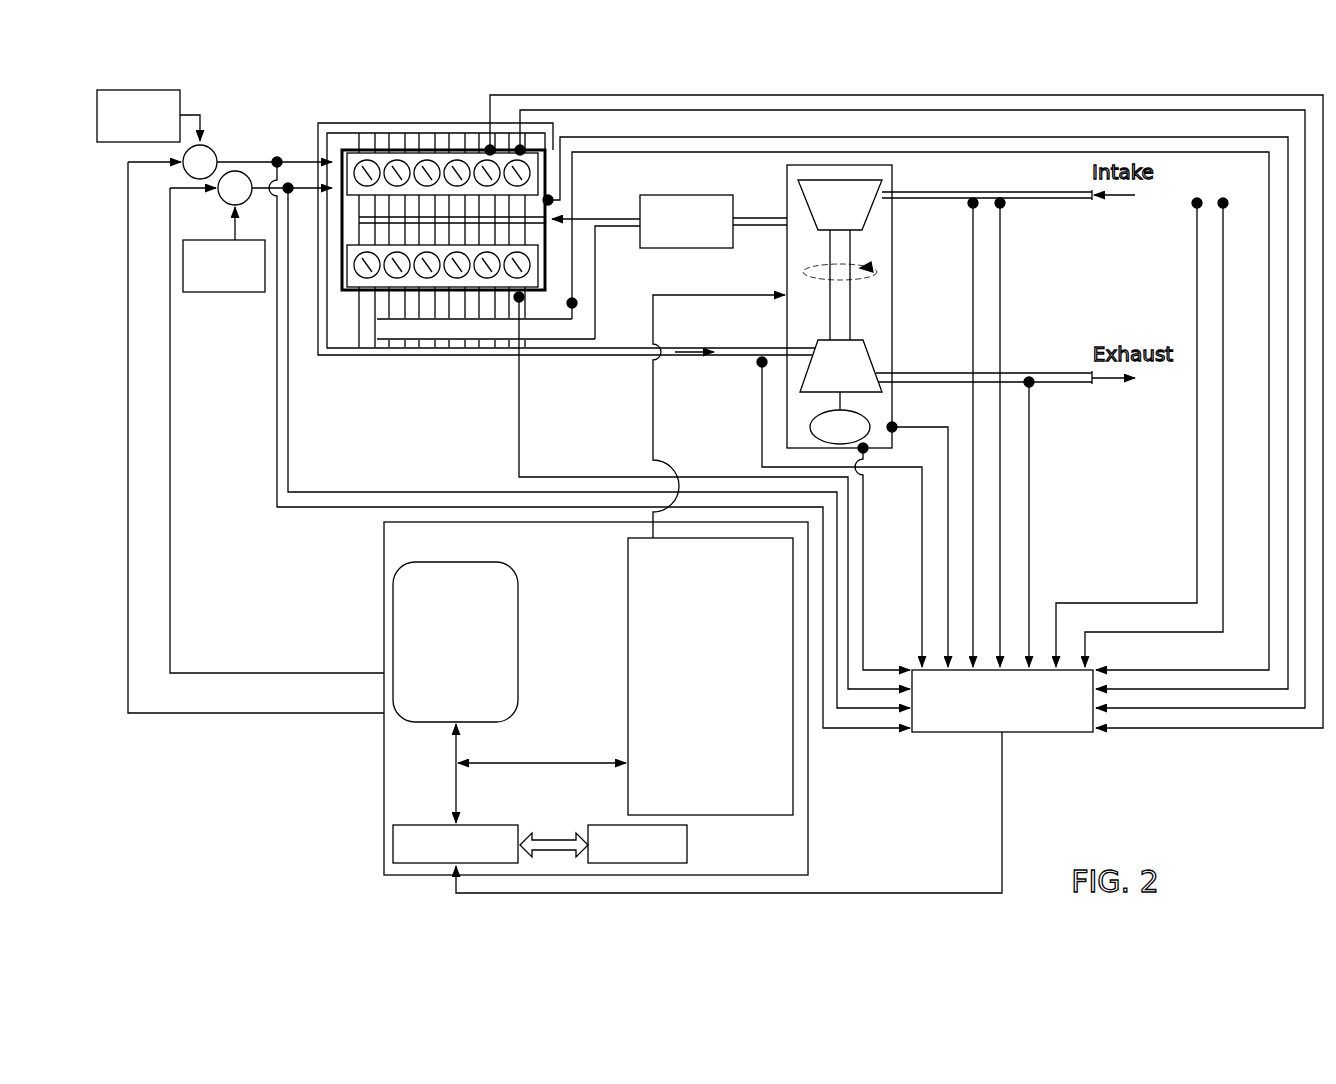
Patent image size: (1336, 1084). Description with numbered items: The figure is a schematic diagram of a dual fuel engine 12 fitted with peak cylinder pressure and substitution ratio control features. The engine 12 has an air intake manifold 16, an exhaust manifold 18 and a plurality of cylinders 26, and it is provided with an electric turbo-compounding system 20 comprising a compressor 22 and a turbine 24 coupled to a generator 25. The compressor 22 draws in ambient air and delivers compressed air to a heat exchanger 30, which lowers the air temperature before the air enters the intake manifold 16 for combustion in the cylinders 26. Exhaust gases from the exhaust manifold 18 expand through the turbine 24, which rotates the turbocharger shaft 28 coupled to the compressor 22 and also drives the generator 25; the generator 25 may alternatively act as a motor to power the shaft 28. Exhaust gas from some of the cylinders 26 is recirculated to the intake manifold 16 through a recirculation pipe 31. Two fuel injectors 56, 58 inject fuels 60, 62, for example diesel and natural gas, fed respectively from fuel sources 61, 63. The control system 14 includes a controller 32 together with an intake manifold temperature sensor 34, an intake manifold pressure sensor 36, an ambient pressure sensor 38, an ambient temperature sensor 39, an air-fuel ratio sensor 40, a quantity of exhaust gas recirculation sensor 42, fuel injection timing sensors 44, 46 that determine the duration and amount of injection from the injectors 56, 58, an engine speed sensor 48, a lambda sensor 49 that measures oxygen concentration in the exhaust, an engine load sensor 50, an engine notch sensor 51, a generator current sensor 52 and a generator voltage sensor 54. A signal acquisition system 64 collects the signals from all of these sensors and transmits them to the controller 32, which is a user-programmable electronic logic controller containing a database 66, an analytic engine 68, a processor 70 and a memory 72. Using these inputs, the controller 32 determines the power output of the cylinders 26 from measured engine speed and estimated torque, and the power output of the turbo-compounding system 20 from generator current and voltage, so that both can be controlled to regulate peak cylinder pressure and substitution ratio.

The engine 12 is at (566, 246).
The control system 14 is at (561, 698).
The air intake manifold 16 is at (628, 230).
The exhaust manifold 18 is at (718, 344).
The electric turbo-compounding system 20 is at (898, 277).
The compressor 22 is at (840, 205).
The turbine 24 is at (841, 366).
The generator 25 is at (808, 430).
The cylinders 26 is at (424, 158).
The turbocharger shaft 28 is at (855, 332).
The heat exchanger 30 is at (712, 250).
The recirculation pipe 31 is at (465, 328).
The controller 32 is at (383, 640).
The intake manifold temperature sensor 34 is at (1003, 208).
The intake manifold pressure sensor 36 is at (977, 199).
The ambient pressure sensor 38 is at (1194, 207).
The ambient temperature sensor 39 is at (1226, 207).
The air-fuel ratio sensor 40 is at (554, 197).
The quantity of exhaust gas recirculation sensor 42 is at (578, 304).
The fuel injection timing sensor 44 is at (274, 160).
The fuel injection timing sensor 46 is at (290, 183).
The engine speed sensor 48 is at (524, 146).
The lambda sensor 49 is at (758, 366).
The engine load sensor 50 is at (487, 146).
The engine notch sensor 51 is at (516, 303).
The generator current sensor 52 is at (866, 453).
The generator voltage sensor 54 is at (896, 424).
The fuel injector 56 is at (212, 148).
The fuel injector 58 is at (226, 202).
The fuel 60 is at (278, 156).
The fuel source 61 is at (122, 146).
The fuel 62 is at (290, 195).
The fuel source 63 is at (236, 294).
The signal acquisition system 64 is at (945, 735).
The database 66 is at (516, 566).
The analytic engine 68 is at (626, 578).
The processor 70 is at (405, 822).
The memory 72 is at (690, 845).